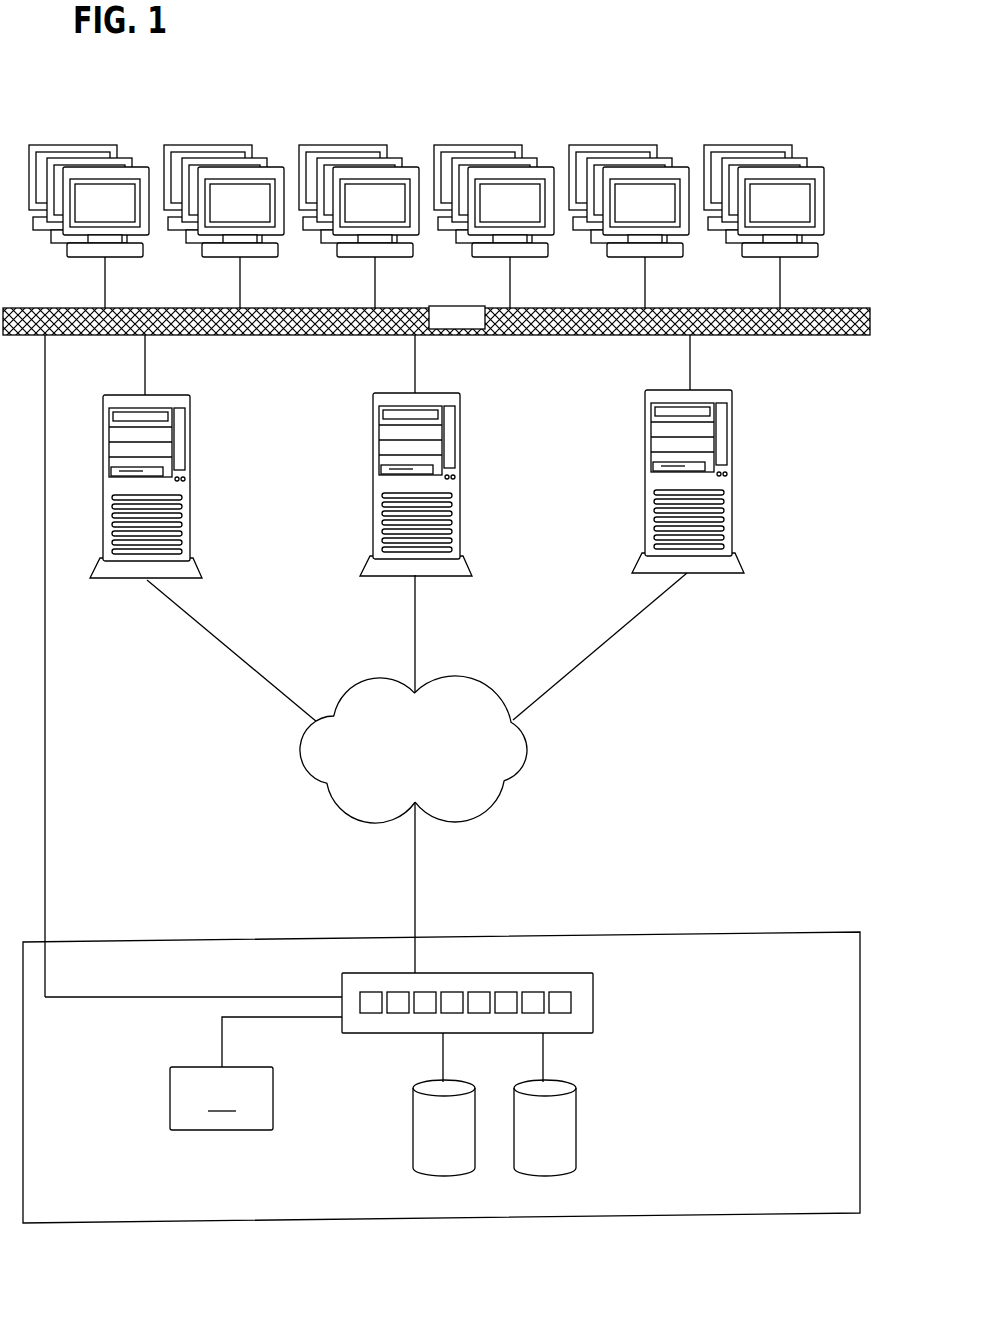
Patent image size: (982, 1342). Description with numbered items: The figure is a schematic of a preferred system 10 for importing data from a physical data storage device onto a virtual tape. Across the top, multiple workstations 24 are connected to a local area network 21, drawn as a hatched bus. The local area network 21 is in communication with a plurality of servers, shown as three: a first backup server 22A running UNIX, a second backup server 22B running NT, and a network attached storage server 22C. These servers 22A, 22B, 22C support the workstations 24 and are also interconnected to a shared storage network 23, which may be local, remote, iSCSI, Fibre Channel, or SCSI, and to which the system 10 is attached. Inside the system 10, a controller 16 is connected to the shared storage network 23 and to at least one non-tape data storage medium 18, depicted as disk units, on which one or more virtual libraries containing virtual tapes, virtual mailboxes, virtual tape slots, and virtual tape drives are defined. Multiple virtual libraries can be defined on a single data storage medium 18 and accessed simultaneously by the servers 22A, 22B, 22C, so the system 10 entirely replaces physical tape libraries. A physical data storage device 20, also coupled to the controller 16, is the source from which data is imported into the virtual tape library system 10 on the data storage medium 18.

The system 10 is at (655, 1026).
The controller 16 is at (593, 990).
The non-tape data storage medium 18 is at (577, 1140).
The physical data storage device 20 is at (221, 1098).
The local area network 21 is at (805, 305).
The server 22A is at (190, 483).
The server 22B is at (460, 481).
The server 22C is at (730, 478).
The shared storage network 23 is at (527, 760).
The workstations 24 is at (222, 145).